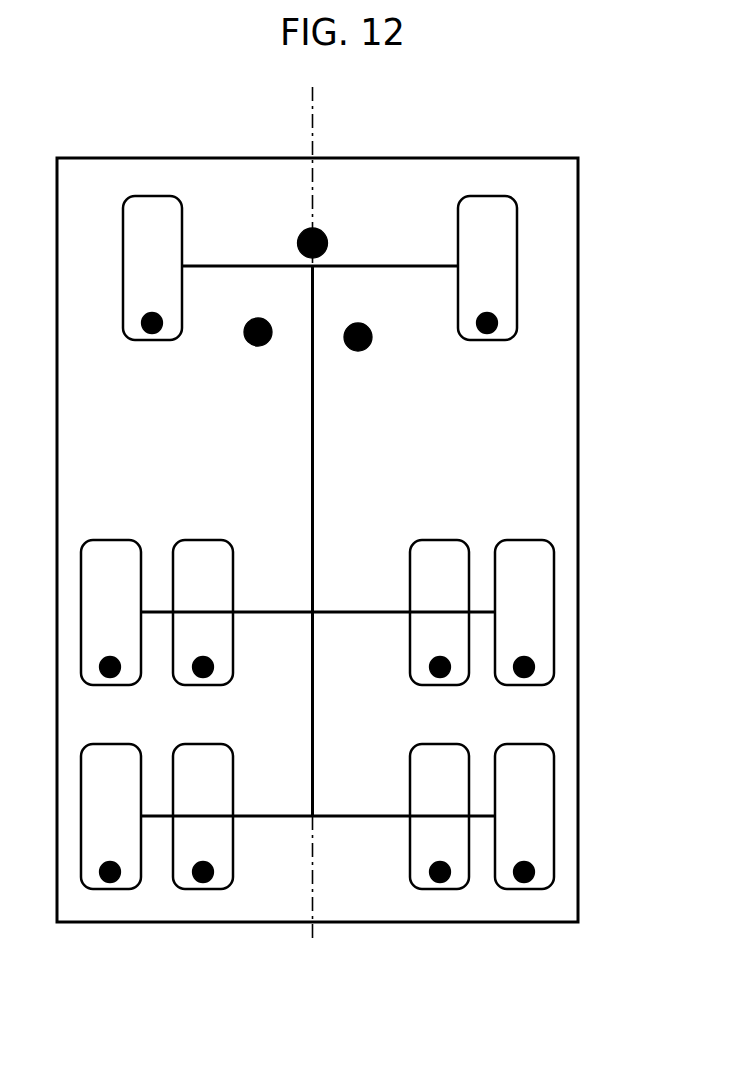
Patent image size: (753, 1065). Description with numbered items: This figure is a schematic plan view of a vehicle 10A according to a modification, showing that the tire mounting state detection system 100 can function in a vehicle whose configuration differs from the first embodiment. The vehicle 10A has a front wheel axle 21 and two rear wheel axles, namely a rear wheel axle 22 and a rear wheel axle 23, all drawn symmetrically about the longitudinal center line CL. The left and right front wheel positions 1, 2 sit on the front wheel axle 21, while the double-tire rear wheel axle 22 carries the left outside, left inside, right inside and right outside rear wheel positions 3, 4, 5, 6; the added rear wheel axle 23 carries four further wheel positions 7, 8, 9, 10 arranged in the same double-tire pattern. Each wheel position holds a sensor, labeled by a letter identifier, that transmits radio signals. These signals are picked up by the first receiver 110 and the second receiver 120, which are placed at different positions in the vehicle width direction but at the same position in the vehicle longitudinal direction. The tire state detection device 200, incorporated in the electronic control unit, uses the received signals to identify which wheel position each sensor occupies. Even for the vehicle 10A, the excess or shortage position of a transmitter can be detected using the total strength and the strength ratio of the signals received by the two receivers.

The vehicle 10A is at (579, 207).
The center line CL is at (314, 133).
The left front wheel position 1 is at (152, 263).
The right front wheel position 2 is at (487, 268).
The left outside rear wheel position 3 is at (111, 613).
The left inside rear wheel position 4 is at (203, 613).
The right inside rear wheel position 5 is at (439, 613).
The right outside rear wheel position 6 is at (524, 613).
The seat 7 is at (111, 817).
The seat 8 is at (203, 817).
The seat 9 is at (439, 817).
The seat 10 is at (524, 817).
The front wheel axle 21 is at (218, 264).
The rear wheel axle 22 is at (268, 610).
The rear wheel axle 23 is at (268, 814).
The tire mounting state detection system 100 is at (377, 216).
The receiver 110 is at (262, 348).
The receiver 120 is at (365, 352).
The tire state detection device 200 is at (328, 243).